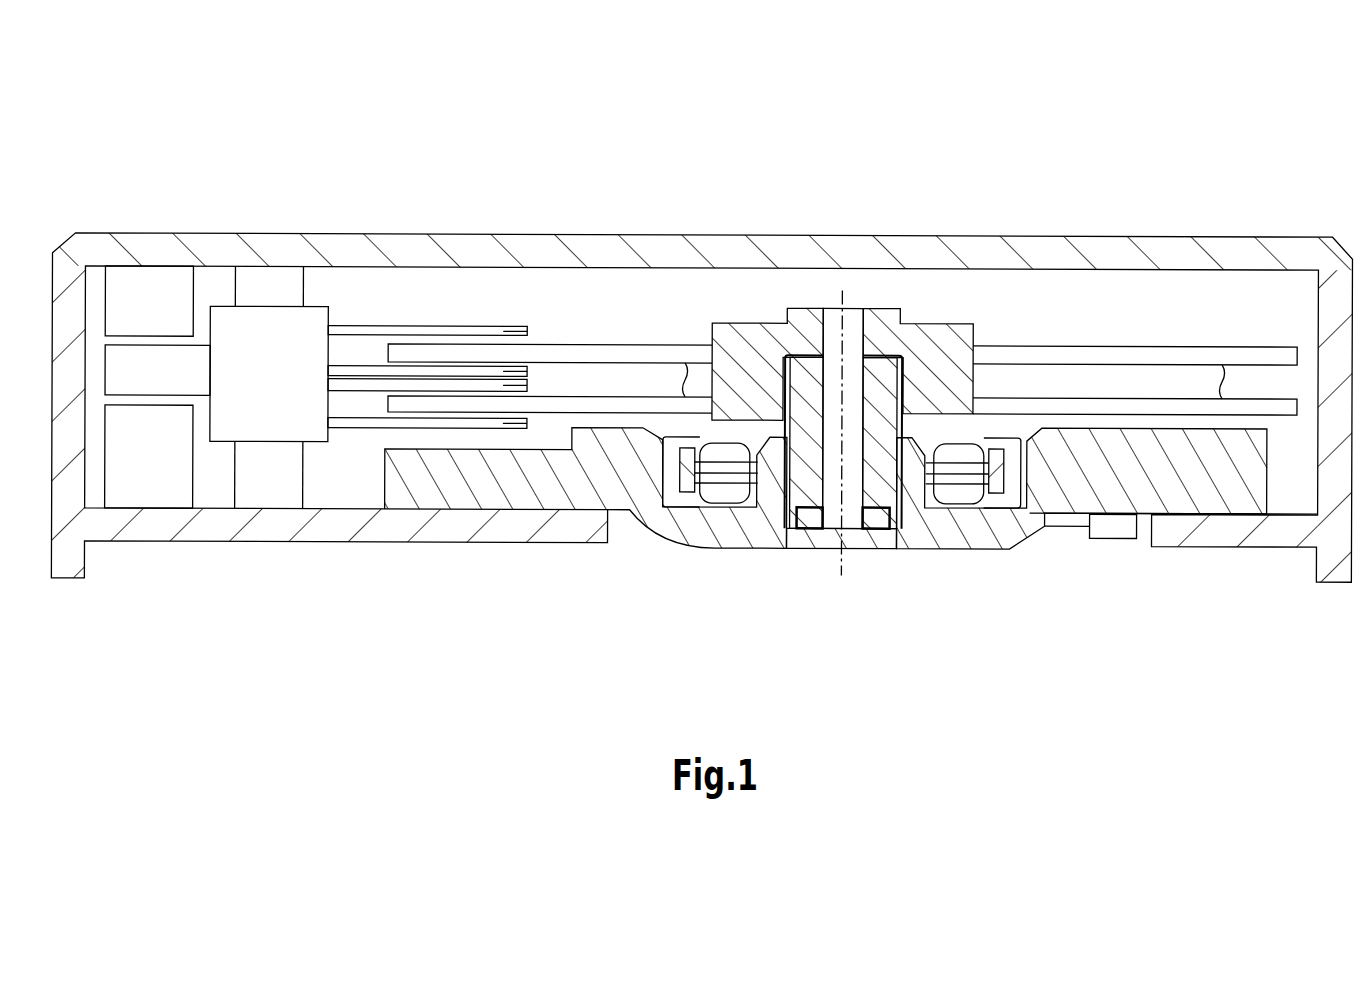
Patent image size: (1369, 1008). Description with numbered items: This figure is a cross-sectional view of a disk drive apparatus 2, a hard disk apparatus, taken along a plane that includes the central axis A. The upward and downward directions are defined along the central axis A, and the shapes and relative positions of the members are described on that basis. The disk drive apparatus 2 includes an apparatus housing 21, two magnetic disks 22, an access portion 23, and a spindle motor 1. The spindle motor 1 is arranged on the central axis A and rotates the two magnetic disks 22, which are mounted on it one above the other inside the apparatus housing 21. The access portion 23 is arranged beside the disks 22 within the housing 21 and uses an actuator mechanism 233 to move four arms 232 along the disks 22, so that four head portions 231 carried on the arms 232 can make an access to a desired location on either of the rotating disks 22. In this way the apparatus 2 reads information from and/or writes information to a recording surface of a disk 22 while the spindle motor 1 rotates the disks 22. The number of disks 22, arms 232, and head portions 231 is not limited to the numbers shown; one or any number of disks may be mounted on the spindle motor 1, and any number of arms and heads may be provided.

The spindle motor 1 is at (752, 312).
The disk drive apparatus 2 is at (128, 156).
The apparatus housing 21 is at (1192, 228).
The magnetic disks 22 is at (1097, 353).
The access portion 23 is at (328, 478).
The head portions 231 is at (515, 423).
The arms 232 is at (376, 524).
The actuator mechanism 233 is at (275, 430).
The central axis A is at (841, 453).